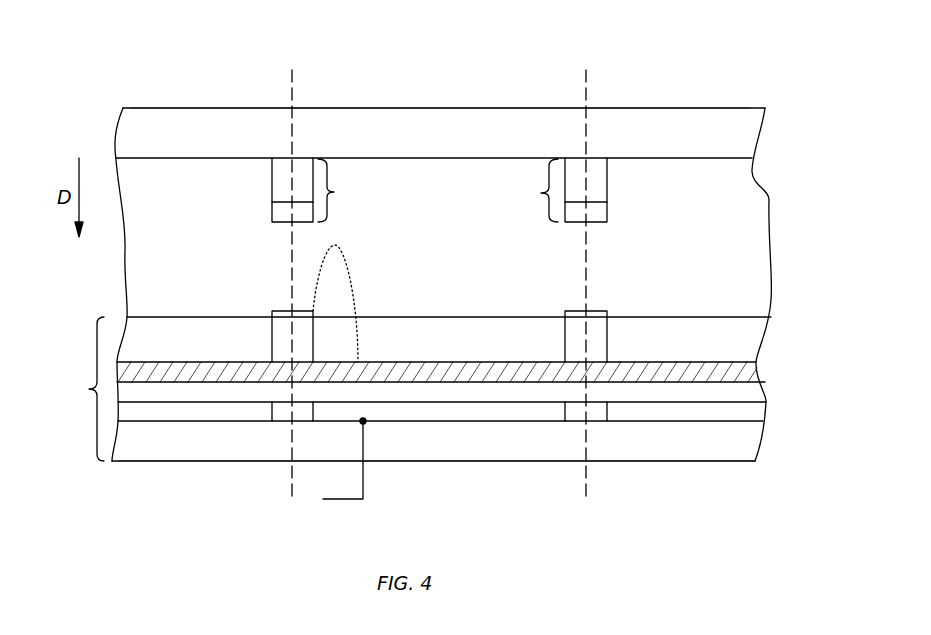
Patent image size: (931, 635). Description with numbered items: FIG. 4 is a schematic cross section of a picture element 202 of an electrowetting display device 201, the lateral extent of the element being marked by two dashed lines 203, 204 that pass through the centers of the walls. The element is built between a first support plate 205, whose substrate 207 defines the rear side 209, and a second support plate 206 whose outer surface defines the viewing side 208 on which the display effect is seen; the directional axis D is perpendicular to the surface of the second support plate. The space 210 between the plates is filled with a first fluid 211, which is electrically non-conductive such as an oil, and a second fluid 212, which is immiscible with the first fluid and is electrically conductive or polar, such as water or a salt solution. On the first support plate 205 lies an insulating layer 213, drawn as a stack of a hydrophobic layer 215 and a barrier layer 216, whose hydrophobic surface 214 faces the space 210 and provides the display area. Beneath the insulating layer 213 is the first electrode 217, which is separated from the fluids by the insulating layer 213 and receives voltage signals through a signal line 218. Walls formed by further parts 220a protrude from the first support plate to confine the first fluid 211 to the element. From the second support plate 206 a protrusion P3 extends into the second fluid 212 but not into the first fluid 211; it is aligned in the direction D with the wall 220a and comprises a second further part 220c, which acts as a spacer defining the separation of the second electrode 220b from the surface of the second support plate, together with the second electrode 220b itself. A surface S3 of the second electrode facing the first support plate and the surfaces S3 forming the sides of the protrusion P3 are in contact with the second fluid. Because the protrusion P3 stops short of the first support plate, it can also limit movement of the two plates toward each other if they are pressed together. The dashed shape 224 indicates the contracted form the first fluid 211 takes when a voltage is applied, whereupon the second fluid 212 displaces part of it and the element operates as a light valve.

The electrowetting display device 201 is at (801, 46).
The picture element 202 is at (455, 45).
The dashed line 203 is at (292, 83).
The dashed line 204 is at (586, 80).
The first support plate 205 is at (77, 389).
The second support plate 206 is at (752, 135).
The substrate 207 is at (670, 462).
The viewing side 208 is at (393, 108).
The rear side 209 is at (436, 462).
The space 210 is at (487, 172).
The first fluid 211 is at (387, 327).
The second fluid 212 is at (752, 231).
The insulating layer 213 is at (470, 343).
The hydrophobic surface 214 is at (523, 360).
The hydrophobic layer 215 is at (478, 372).
The barrier layer 216 is at (434, 392).
The first electrode 217 is at (500, 414).
The signal line 218 is at (341, 500).
The further part 220a is at (272, 337).
The second electrode 220b is at (272, 208).
The second further part 220c is at (272, 177).
The dashed shape 224 is at (352, 262).
The protrusion P3 is at (438, 190).
The surface S3 is at (313, 222).